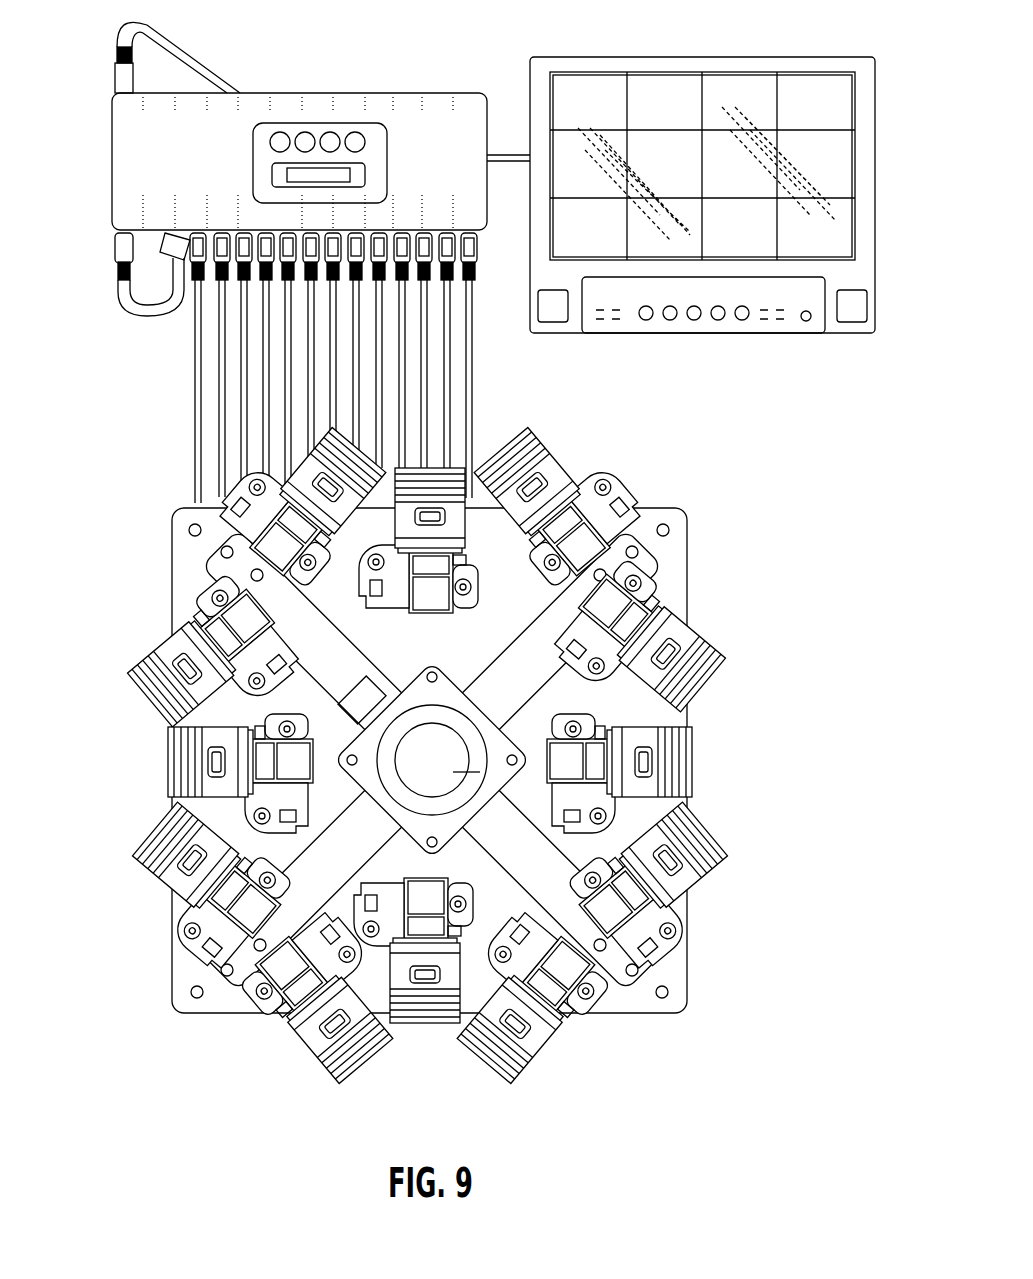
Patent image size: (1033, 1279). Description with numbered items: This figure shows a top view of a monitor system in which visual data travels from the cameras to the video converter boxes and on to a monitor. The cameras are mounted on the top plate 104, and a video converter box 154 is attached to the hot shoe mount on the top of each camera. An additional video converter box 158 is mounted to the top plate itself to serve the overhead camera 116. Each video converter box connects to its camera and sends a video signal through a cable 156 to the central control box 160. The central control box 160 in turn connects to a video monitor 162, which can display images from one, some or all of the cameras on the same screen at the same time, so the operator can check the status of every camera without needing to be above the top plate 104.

The top plate 104 is at (678, 884).
The overhead camera 116 is at (687, 903).
The video converter boxes 154 is at (607, 483).
The cable 156 is at (710, 687).
The additional video converter box 158 is at (627, 508).
The central control box 160 is at (137, 178).
The video monitor 162 is at (840, 167).